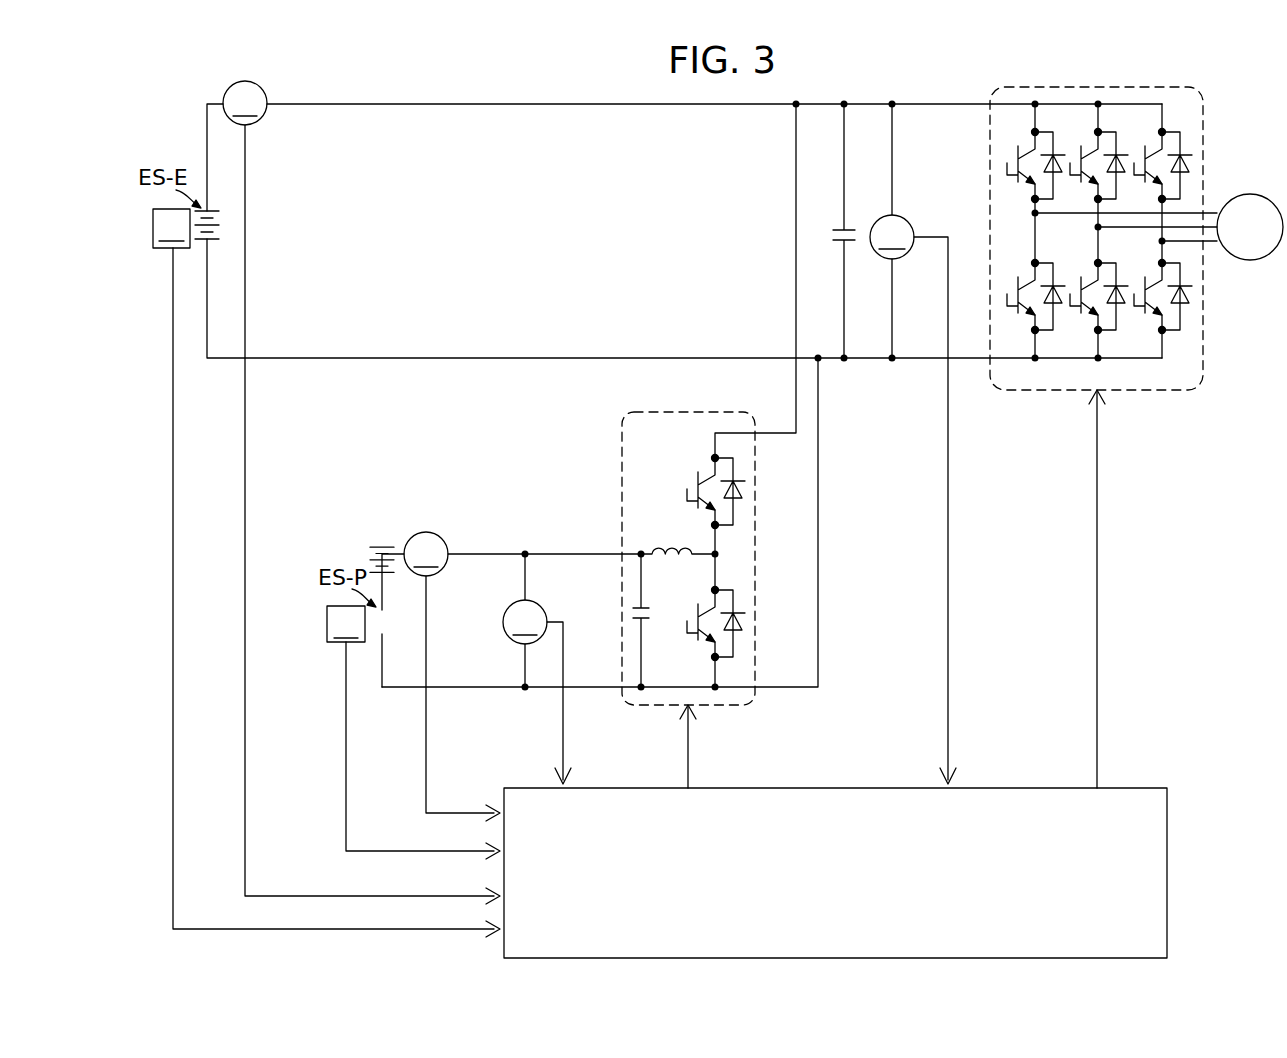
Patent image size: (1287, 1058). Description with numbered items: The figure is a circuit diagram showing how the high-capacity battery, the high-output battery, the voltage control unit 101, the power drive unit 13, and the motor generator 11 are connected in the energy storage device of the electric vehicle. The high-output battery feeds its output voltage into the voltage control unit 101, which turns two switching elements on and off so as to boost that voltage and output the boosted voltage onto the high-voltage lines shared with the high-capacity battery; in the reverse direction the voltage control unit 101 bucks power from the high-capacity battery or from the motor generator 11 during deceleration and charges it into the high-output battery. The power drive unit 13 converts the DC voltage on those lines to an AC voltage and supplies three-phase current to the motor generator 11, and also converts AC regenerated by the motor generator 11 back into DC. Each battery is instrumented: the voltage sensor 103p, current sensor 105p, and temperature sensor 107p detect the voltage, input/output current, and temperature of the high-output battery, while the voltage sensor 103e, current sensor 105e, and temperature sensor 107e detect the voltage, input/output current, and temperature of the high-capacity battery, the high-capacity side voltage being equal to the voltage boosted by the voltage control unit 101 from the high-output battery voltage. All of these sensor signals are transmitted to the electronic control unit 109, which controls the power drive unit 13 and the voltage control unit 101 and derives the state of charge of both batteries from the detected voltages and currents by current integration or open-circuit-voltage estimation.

The current sensor 105e is at (262, 120).
The temperature sensor 107e is at (160, 248).
The voltage sensor 103e is at (908, 221).
The power drive unit 13 is at (1152, 390).
The motor generator 11 is at (1250, 260).
The voltage control unit 101 is at (620, 462).
The current sensor 105p is at (412, 535).
The voltage sensor 103p is at (543, 607).
The temperature sensor 107p is at (333, 642).
The electronic control unit 109 is at (1167, 855).